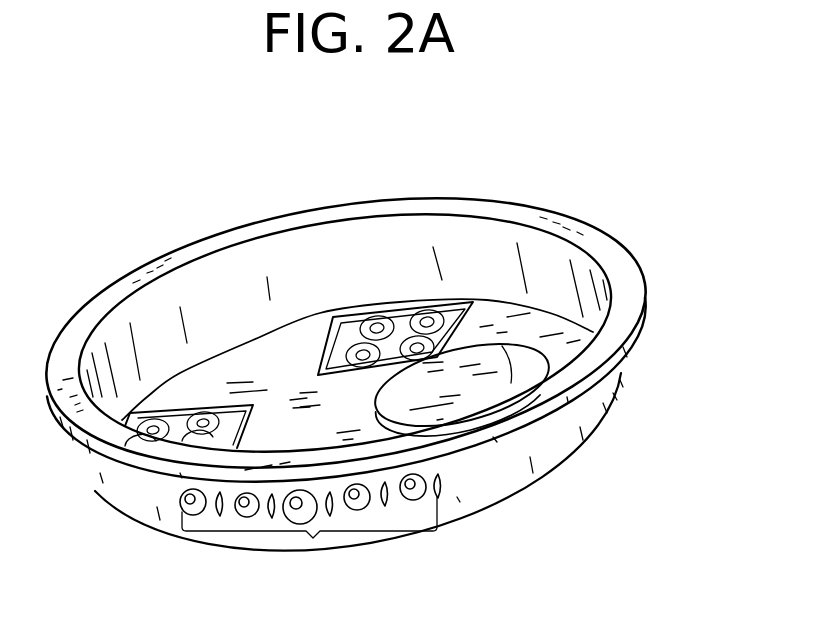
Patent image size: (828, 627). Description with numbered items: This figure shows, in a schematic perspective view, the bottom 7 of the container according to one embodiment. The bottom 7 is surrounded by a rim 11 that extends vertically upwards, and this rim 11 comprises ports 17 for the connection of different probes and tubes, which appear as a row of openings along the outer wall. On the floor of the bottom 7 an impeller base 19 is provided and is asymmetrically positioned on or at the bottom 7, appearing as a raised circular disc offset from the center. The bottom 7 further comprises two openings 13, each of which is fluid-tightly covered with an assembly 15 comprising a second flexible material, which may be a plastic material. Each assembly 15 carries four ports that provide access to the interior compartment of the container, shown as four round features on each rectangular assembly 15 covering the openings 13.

The bottom 7 is at (672, 319).
The rim 11 is at (605, 251).
The openings 13 is at (463, 314).
The assembly 15 is at (343, 320).
The ports 17 is at (313, 538).
The impeller base 19 is at (512, 345).